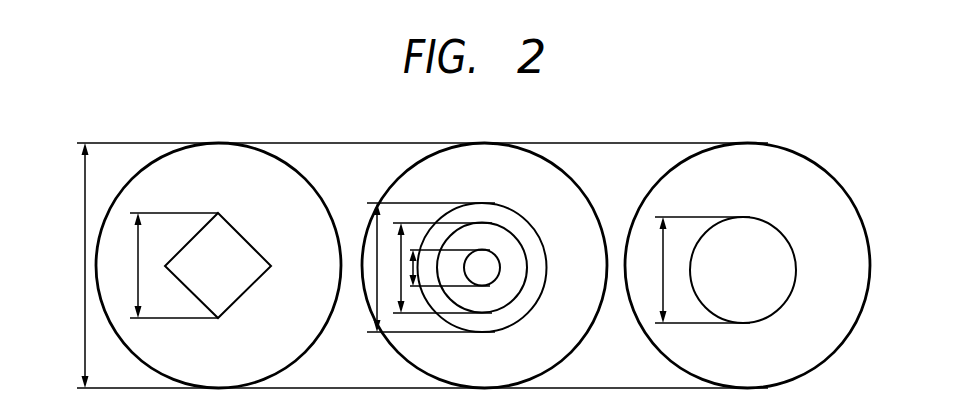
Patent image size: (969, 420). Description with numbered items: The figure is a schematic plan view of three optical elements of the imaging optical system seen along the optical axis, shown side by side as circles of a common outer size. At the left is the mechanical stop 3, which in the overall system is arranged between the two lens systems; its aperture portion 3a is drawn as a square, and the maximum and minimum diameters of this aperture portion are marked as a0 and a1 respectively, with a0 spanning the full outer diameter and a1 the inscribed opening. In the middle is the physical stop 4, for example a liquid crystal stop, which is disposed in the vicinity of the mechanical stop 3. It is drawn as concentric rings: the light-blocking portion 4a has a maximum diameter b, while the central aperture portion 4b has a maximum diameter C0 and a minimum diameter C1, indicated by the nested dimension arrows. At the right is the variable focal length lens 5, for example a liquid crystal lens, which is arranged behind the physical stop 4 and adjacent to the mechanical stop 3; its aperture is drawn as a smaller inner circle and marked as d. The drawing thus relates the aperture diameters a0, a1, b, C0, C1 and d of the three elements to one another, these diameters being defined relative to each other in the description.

The mechanical stop 3 is at (282, 161).
The aperture portion 3a is at (247, 242).
The physical stop 4 is at (537, 155).
The light-blocking portion 4a is at (513, 211).
The aperture portion 4b is at (498, 271).
The variable focal length lens 5 is at (793, 152).
The maximum diameter of the aperture portion of the mechanical stop a0 is at (73, 265).
The minimum diameter of the aperture portion of the mechanical stop a1 is at (164, 265).
The maximum diameter of the light-blocking portion b is at (429, 267).
The maximum diameter of the aperture portion of the physical stop C0 is at (401, 269).
The minimum diameter of the aperture portion of the physical stop C1 is at (413, 267).
The aperture of the variable focal length lens d is at (697, 270).